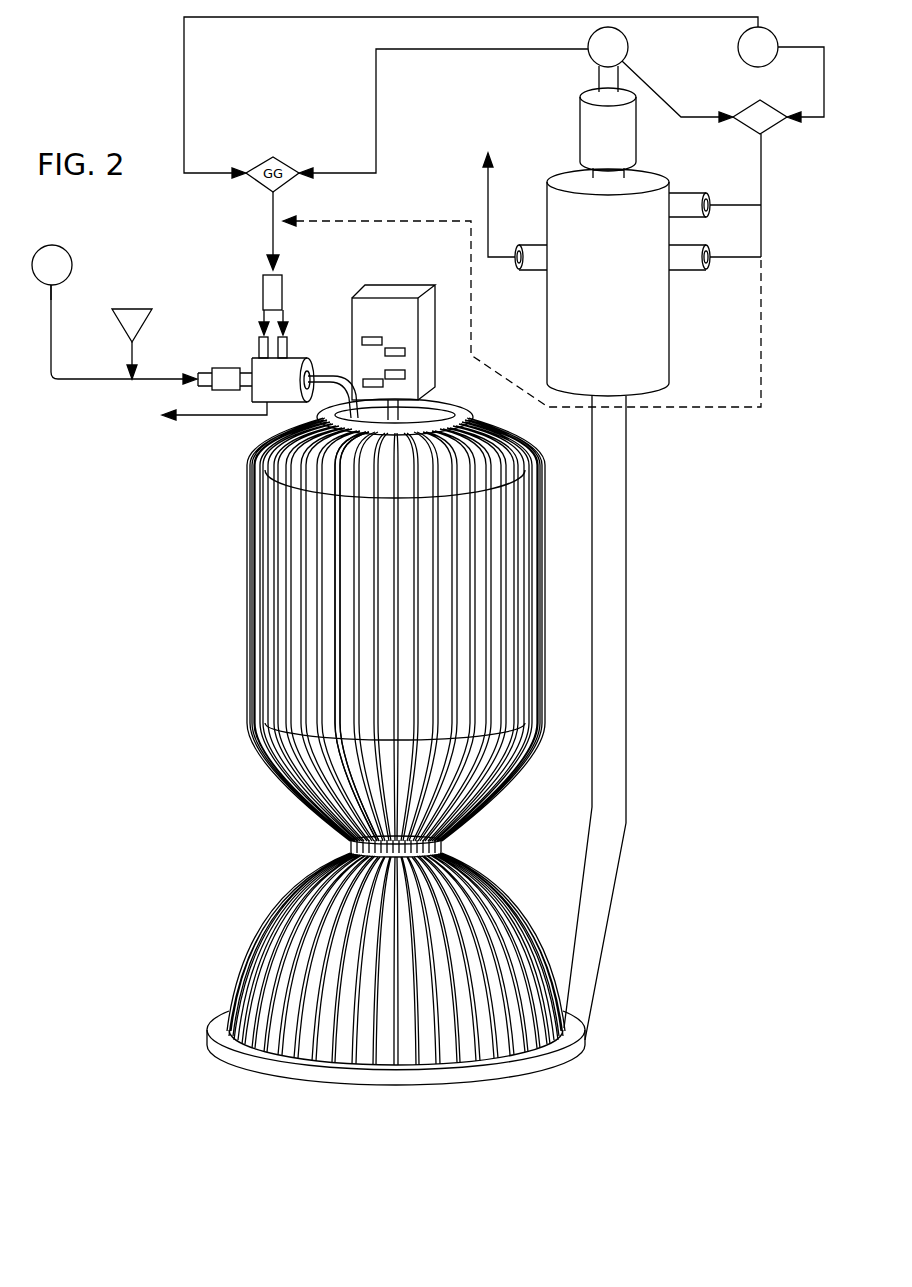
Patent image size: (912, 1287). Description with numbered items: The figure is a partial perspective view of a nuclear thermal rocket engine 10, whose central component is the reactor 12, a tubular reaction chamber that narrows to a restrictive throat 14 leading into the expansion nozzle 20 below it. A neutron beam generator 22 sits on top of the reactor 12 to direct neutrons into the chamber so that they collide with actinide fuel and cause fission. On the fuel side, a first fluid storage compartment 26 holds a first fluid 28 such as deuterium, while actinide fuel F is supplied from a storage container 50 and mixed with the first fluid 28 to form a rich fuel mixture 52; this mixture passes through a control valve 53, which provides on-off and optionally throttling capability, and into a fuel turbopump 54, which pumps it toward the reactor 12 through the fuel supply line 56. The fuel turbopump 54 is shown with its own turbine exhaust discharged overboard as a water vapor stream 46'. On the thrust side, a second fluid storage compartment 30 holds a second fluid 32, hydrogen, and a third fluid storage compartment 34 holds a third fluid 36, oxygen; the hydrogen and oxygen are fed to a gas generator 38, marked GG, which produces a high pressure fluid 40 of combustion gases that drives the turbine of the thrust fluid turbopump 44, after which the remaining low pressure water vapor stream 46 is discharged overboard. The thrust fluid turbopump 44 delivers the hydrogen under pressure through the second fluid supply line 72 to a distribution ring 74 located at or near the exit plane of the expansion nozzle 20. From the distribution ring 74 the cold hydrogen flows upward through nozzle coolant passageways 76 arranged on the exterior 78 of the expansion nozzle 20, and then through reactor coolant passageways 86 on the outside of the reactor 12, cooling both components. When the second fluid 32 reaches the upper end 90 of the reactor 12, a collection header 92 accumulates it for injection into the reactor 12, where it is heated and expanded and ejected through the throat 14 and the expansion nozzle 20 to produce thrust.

The nuclear thermal rocket engine 10 is at (133, 660).
The reactor 12 is at (352, 622).
The restrictive throat 14 is at (352, 843).
The expansion nozzle 20 is at (300, 902).
The neutron beam generator 22 is at (352, 318).
The first fluid storage compartment 26 is at (48, 246).
The first fluid 28 is at (51, 296).
The second fluid storage compartment 30 is at (628, 44).
The second fluid 32 is at (585, 70).
The third fluid storage compartment 34 is at (774, 33).
The third fluid 36 is at (745, 58).
The gas generator 38 is at (760, 100).
The high pressure fluid 40 is at (761, 160).
The thrust fluid turbopump 44 is at (669, 330).
The low pressure water vapor stream 46 is at (476, 205).
The water vapor stream 46' is at (214, 429).
The storage container 50 is at (130, 309).
The rich fuel mixture 52 is at (148, 379).
The control valve 53 is at (227, 368).
The fuel turbopump 54 is at (254, 360).
The fuel supply line 56 is at (332, 376).
The second fluid supply line 72 is at (628, 737).
The distribution ring 74 is at (447, 1053).
The nozzle coolant passageways 76 is at (465, 965).
The exterior of expansion nozzle 78 is at (370, 1048).
The reactor coolant passageways 86 is at (343, 547).
The upper end of reactor 90 is at (423, 464).
The collection header 92 is at (443, 398).